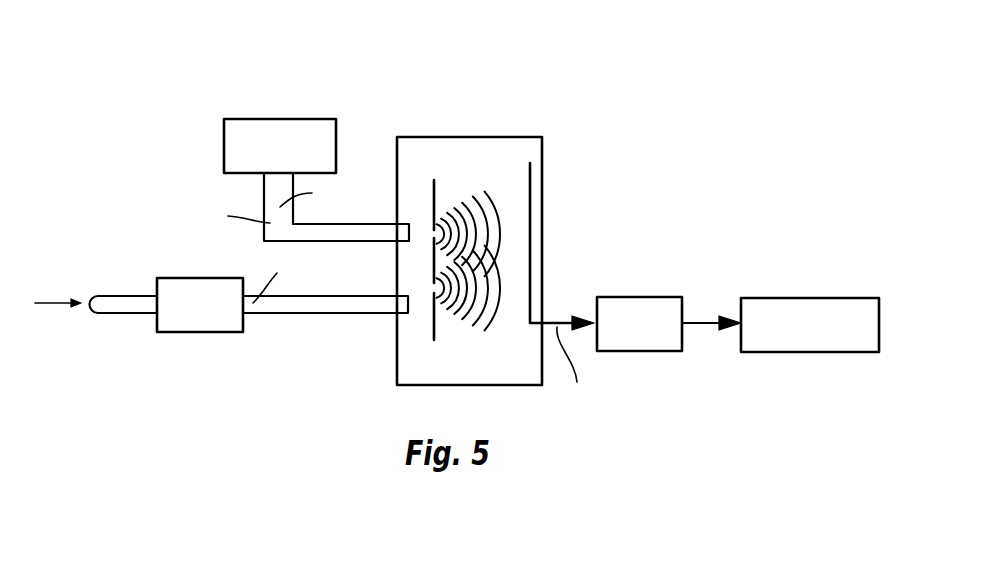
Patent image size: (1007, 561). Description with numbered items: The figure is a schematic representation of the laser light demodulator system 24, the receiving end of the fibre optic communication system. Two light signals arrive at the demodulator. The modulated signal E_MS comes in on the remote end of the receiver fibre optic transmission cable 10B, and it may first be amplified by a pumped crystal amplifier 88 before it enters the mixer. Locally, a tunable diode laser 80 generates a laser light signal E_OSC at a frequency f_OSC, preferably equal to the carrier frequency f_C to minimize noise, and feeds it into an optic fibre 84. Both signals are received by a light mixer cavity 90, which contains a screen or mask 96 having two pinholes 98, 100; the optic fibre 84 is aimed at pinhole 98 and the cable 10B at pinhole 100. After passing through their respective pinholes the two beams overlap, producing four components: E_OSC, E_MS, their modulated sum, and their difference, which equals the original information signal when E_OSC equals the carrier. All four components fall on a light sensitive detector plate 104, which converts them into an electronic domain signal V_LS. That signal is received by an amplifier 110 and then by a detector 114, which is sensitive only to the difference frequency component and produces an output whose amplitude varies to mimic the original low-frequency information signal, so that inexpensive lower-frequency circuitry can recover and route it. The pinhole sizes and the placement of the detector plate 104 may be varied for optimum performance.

The laser light demodulator system 24 is at (385, 94).
The laser 80 is at (257, 119).
The optic fibre 84 is at (332, 235).
The pumped crystal amplifier 88 is at (203, 333).
The remote end of fibre optic transmission cable 10B is at (298, 310).
The light mixer cavity 90 is at (432, 135).
The screen or mask 96 is at (435, 192).
The pinhole 98 is at (433, 230).
The pinhole 100 is at (433, 290).
The light sensitive detector plate 104 is at (532, 223).
The amplifier 110 is at (642, 342).
The detector 114 is at (812, 343).